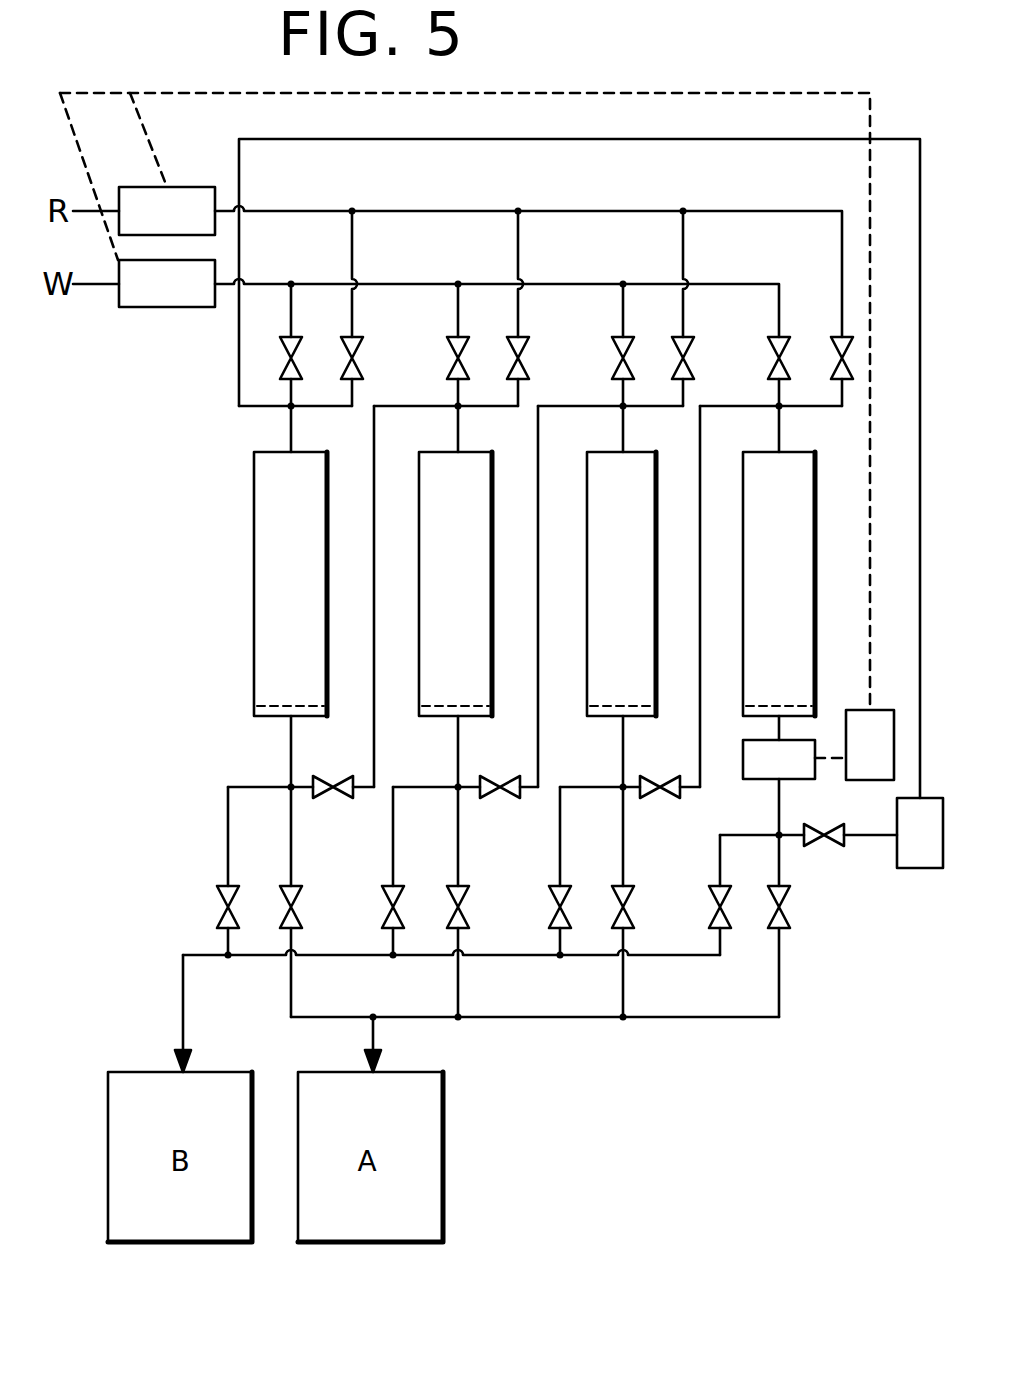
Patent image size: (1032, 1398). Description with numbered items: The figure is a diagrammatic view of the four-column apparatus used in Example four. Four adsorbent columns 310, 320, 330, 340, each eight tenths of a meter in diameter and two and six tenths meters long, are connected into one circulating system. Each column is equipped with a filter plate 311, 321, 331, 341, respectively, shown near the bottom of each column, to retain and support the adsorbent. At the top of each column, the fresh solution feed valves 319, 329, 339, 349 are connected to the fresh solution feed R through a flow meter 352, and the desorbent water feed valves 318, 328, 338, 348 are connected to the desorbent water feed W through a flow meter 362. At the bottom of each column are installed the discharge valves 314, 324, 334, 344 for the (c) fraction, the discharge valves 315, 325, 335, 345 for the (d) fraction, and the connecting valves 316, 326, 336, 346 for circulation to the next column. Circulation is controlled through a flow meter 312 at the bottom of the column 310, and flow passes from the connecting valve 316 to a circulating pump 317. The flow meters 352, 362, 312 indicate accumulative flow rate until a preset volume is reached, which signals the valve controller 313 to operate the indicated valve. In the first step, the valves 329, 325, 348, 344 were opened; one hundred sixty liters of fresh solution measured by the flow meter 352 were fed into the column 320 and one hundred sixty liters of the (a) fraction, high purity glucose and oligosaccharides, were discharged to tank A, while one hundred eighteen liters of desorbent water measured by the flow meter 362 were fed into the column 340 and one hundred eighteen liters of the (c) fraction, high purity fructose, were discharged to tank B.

The column 310 is at (779, 584).
The filter plate 311 is at (778, 700).
The flow meter 312 is at (779, 760).
The valve controller 313 is at (865, 772).
The discharge valve 314 is at (714, 906).
The discharge valve 315 is at (788, 913).
The connecting valve 316 is at (816, 846).
The circulating pump 317 is at (922, 868).
The desorbent water feed valve 318 is at (774, 352).
The fresh solution feed valve 319 is at (835, 348).
The column 320 is at (621, 584).
The filter plate 321 is at (620, 700).
The discharge valve 324 is at (554, 906).
The discharge valve 325 is at (629, 900).
The connecting valve 326 is at (660, 798).
The desorbent water feed valve 328 is at (617, 352).
The fresh solution feed valve 329 is at (690, 352).
The column 330 is at (455, 584).
The filter plate 331 is at (455, 700).
The discharge valve 334 is at (387, 906).
The discharge valve 335 is at (464, 900).
The connecting valve 336 is at (500, 798).
The desorbent water feed valve 338 is at (452, 352).
The fresh solution feed valve 339 is at (524, 354).
The column 340 is at (290, 584).
The filter plate 341 is at (290, 700).
The discharge valve 344 is at (222, 906).
The discharge valve 345 is at (297, 900).
The connecting valve 346 is at (333, 798).
The desorbent water feed valve 348 is at (285, 348).
The fresh solution feed valve 349 is at (358, 354).
The flow meter 352 is at (167, 211).
The flow meter 362 is at (167, 283).